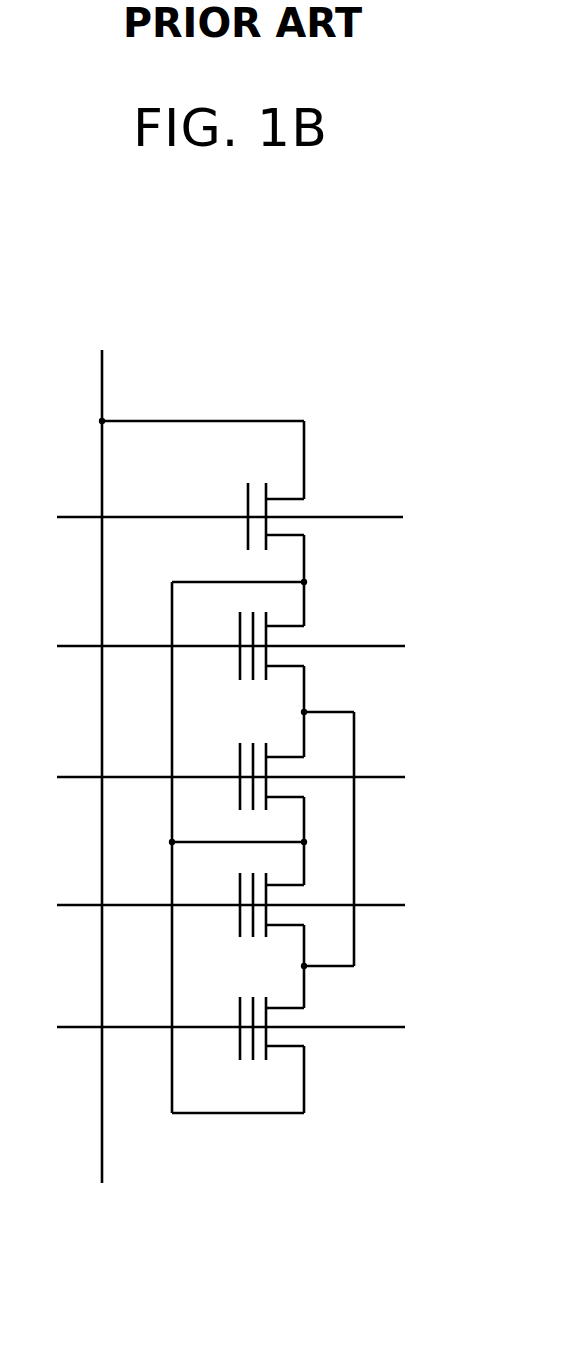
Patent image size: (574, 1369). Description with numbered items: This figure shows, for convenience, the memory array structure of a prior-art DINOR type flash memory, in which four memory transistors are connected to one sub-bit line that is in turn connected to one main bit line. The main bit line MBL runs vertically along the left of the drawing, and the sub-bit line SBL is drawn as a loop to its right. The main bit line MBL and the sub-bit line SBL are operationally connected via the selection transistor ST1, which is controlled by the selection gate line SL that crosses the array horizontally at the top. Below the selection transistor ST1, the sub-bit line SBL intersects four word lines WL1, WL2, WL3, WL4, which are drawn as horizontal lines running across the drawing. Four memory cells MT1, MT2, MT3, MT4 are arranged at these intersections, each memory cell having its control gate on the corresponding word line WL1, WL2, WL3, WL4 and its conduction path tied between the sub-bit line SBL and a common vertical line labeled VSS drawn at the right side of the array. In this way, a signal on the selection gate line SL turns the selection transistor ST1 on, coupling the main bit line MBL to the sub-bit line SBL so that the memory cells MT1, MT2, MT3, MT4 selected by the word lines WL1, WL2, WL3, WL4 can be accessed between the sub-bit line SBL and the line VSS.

The main bit line MBL is at (168, 766).
The sub-bit line SBL is at (206, 847).
The selection gate line SL is at (248, 516).
The selection transistor ST1 is at (249, 516).
The memory cell MT1 is at (246, 645).
The memory cell MT2 is at (244, 770).
The memory cell MT3 is at (243, 904).
The memory cell MT4 is at (243, 1027).
The word line WL1 is at (262, 645).
The word line WL2 is at (262, 777).
The word line WL3 is at (262, 904).
The word line WL4 is at (262, 1028).
The ground line VSS is at (359, 839).